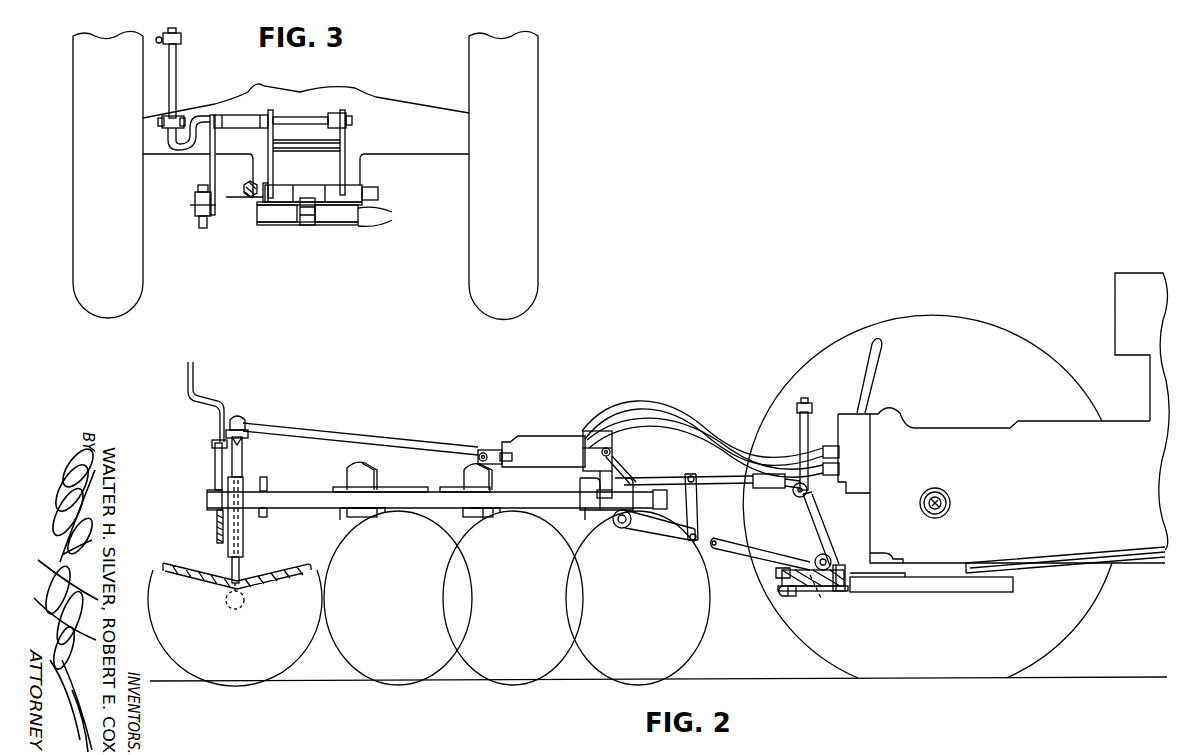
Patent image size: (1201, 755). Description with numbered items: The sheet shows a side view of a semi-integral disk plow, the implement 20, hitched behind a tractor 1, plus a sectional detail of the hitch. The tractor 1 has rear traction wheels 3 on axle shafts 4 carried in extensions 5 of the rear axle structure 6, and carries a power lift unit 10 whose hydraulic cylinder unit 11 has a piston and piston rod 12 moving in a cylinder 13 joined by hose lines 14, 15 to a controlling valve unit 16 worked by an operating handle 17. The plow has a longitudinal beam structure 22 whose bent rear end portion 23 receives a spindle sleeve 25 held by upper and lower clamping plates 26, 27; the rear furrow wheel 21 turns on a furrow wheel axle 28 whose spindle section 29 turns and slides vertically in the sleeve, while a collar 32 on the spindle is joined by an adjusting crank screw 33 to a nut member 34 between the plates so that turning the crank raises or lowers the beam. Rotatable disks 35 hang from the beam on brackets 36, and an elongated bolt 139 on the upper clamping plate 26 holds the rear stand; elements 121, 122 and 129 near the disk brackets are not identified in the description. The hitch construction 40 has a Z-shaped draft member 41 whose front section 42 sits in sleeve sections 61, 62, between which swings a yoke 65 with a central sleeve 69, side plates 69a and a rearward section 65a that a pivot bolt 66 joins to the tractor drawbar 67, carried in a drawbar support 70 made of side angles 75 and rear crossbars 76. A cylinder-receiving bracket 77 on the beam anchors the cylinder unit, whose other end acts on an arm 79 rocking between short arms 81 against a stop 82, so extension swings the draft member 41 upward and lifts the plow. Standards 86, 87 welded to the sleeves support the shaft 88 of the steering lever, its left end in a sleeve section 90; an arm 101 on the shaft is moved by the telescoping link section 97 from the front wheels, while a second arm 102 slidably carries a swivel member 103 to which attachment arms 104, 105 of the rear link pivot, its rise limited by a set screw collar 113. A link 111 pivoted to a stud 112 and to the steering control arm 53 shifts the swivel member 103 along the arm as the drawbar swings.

In FIG. 2, the tractor 1 is at (1110, 318).
In FIG. 3, the rear traction wheels 3 is at (85, 212).
In FIG. 2, the rear traction wheels 3 is at (935, 316).
In FIG. 2, the axle shafts 4 is at (946, 505).
In FIG. 3, the extensions 5 is at (153, 154).
In FIG. 3, the rear axle structure 6 is at (372, 97).
In FIG. 2, the power lift unit 10 is at (902, 412).
In FIG. 2, the hydraulic cylinder unit 11 is at (544, 431).
In FIG. 2, the piston and piston rod 12 is at (492, 451).
In FIG. 2, the cylinder 13 is at (553, 440).
In FIG. 2, the hose line 14 is at (653, 404).
In FIG. 2, the hose line 15 is at (681, 428).
In FIG. 2, the controlling valve unit 16 is at (851, 407).
In FIG. 2, the operating handle 17 is at (874, 372).
In FIG. 2, the implement 20 is at (345, 420).
In FIG. 2, the rear furrow wheel 21 is at (162, 575).
In FIG. 2, the beam structure 22 is at (550, 515).
In FIG. 2, the rear end portion 23 is at (298, 500).
In FIG. 2, the spindle sleeve 25 is at (246, 544).
In FIG. 2, the upper clamping plate 26 is at (248, 480).
In FIG. 2, the lower clamping plate 27 is at (262, 512).
In FIG. 2, the furrow wheel axle 28 is at (230, 610).
In FIG. 2, the spindle section 29 is at (241, 566).
In FIG. 2, the collar 32 is at (244, 426).
In FIG. 2, the adjusting crank screw 33 is at (200, 396).
In FIG. 2, the nut member 34 is at (208, 505).
In FIG. 2, the furrow openers 35 is at (352, 645).
In FIG. 2, the brackets 36 is at (345, 470).
In FIG. 2, the hitch construction 40 is at (752, 557).
In FIG. 2, the draft member 41 is at (735, 537).
In FIG. 3, the front section 42 is at (252, 195).
In FIG. 2, the front section 42 is at (829, 557).
In FIG. 2, the steering control arm 53 is at (663, 543).
In FIG. 3, the sleeve section 61 is at (284, 210).
In FIG. 3, the sleeve section 62 is at (362, 190).
In FIG. 3, the yoke 65 is at (330, 215).
In FIG. 2, the yoke 65 is at (800, 572).
In FIG. 2, the rearwardly extending section 65a is at (823, 604).
In FIG. 3, the pivot bolt 66 is at (307, 225).
In FIG. 2, the pivot bolt 66 is at (793, 596).
In FIG. 2, the drawbar 67 is at (840, 592).
In FIG. 3, the central sleeve 69 is at (308, 190).
In FIG. 2, the side plates 69a is at (790, 585).
In FIG. 2, the drawbar support 70 is at (950, 594).
In FIG. 2, the side angles 75 is at (920, 592).
In FIG. 3, the rear crossbars 76 is at (392, 212).
In FIG. 2, the cylinder-receiving bracket 77 is at (477, 445).
In FIG. 2, the arm 79 is at (612, 458).
In FIG. 2, the arms 81 is at (602, 500).
In FIG. 2, the stop 82 is at (625, 480).
In FIG. 3, the standard 86 is at (275, 164).
In FIG. 3, the standard 87 is at (346, 150).
In FIG. 2, the standard 87 is at (820, 513).
In FIG. 3, the shaft 88 is at (288, 112).
In FIG. 3, the sleeve section 90 is at (248, 122).
In FIG. 3, the telescoping section 97 is at (200, 228).
In FIG. 2, the telescoping section 97 is at (1034, 566).
In FIG. 3, the arm 101 is at (203, 161).
In FIG. 3, the second arm 102 is at (176, 60).
In FIG. 2, the second arm 102 is at (806, 416).
In FIG. 3, the swivel member 103 is at (165, 127).
In FIG. 3, the attachment arm 104 is at (162, 120).
In FIG. 3, the attachment arm 105 is at (183, 116).
In FIG. 2, the link 111 is at (702, 478).
In FIG. 2, the stud 112 is at (686, 480).
In FIG. 3, the set screw collar 113 is at (181, 36).
In FIG. 2, the set screw collar 113 is at (797, 406).
In FIG. 2, the plate 121 is at (388, 488).
In FIG. 2, the bracket 122 is at (394, 517).
In FIG. 2, the brace 129 is at (352, 520).
In FIG. 2, the elongated bolt 139 is at (265, 476).